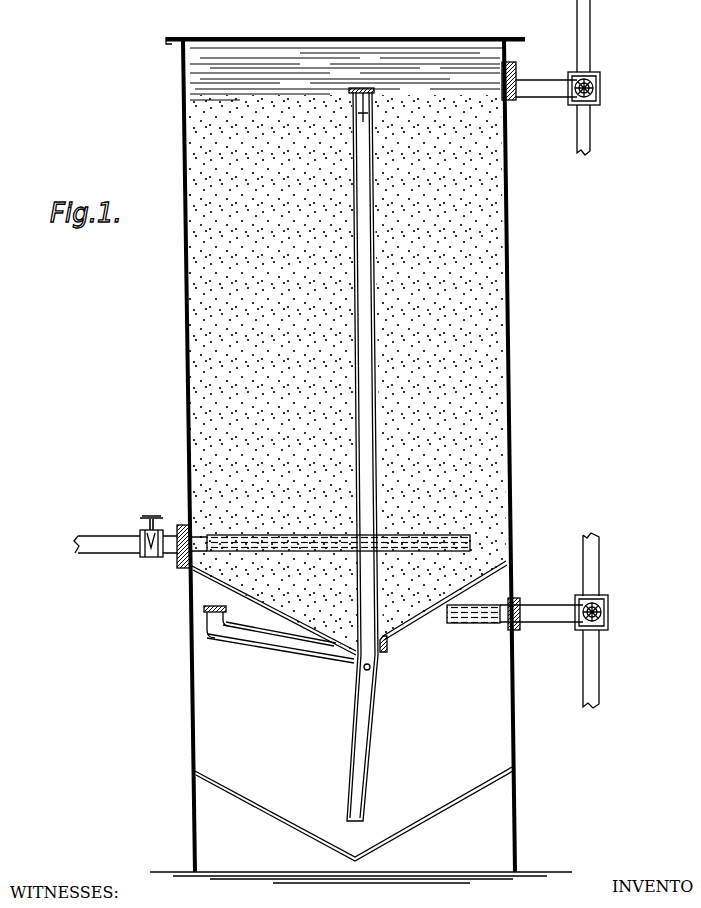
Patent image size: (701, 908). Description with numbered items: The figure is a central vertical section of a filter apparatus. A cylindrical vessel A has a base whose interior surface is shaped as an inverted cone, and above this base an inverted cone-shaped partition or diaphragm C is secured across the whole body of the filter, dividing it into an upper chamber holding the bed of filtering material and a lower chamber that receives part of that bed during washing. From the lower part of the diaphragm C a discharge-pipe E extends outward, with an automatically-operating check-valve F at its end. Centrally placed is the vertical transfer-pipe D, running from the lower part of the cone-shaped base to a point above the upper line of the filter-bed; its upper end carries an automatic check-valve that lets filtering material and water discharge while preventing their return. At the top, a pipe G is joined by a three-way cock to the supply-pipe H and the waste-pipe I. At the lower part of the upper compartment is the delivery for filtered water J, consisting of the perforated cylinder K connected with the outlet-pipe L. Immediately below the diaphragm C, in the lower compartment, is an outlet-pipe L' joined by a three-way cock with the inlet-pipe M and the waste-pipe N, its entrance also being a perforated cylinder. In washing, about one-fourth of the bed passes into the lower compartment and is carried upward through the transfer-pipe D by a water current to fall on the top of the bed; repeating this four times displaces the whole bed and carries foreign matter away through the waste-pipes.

The cylindrical vessel A is at (346, 373).
The inverted cone-shaped partition or diaphragm C is at (349, 615).
The vertical transfer-pipe D is at (358, 454).
The discharge-pipe E is at (280, 647).
The automatically-operating check-valve F is at (221, 618).
The pipe G is at (539, 88).
The supply-pipe H is at (588, 52).
The waste-pipe I is at (589, 130).
The delivery for filtered water J is at (192, 539).
The perforated cylinder K is at (338, 533).
The outlet-pipe L is at (126, 545).
The outlet-pipe L' is at (515, 607).
The inlet-pipe M is at (599, 581).
The waste-pipe N is at (602, 669).